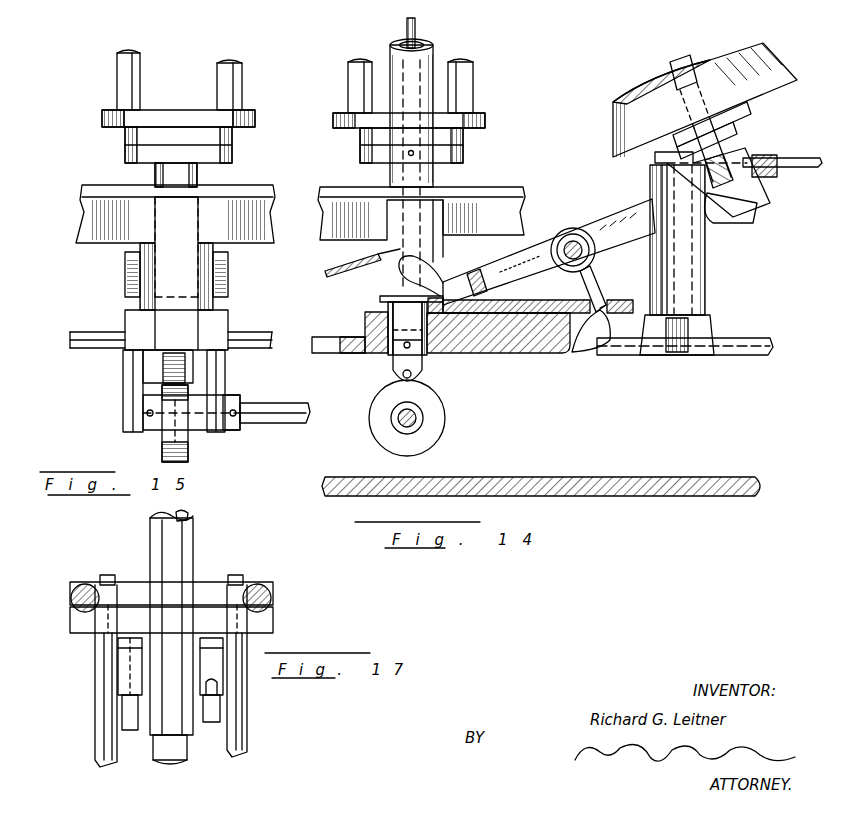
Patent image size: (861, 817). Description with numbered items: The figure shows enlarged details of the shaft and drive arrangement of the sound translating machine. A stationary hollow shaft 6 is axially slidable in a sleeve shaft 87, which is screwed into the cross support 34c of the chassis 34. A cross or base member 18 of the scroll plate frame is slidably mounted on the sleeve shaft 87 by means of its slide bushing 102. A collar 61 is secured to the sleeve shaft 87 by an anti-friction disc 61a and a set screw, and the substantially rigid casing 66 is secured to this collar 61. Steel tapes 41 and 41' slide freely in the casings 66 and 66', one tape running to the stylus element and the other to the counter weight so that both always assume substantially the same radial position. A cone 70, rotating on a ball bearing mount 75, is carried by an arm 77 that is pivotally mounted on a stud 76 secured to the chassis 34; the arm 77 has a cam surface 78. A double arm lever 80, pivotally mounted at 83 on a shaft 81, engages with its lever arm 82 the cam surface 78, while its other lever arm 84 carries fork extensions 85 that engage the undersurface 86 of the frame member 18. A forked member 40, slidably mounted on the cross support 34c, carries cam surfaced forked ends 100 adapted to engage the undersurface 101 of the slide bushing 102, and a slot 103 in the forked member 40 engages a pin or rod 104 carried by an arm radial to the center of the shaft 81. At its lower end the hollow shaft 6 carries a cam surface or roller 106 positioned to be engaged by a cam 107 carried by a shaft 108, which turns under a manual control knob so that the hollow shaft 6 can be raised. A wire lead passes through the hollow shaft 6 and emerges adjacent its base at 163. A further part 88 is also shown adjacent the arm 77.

In FIG. 15, the stationary hollow shaft 6 is at (162, 356).
In FIG. 14, the stationary hollow shaft 6 is at (418, 48).
In FIG. 17, the stationary hollow shaft 6 is at (190, 520).
In FIG. 15, the cross or base member 18 is at (262, 228).
In FIG. 14, the cross or base member 18 is at (460, 190).
In FIG. 14, the chassis 34 is at (628, 346).
In FIG. 14, the cross support 34c is at (368, 330).
In FIG. 14, the forked member 40 is at (505, 355).
In FIG. 17, the steel tape 41 is at (93, 712).
In FIG. 17, the steel tape 41' is at (244, 711).
In FIG. 15, the collar 61 is at (358, 133).
In FIG. 15, the anti-friction disc 61a is at (333, 116).
In FIG. 17, the casing 66 is at (97, 666).
In FIG. 17, the casing 66' is at (242, 670).
In FIG. 14, the cone 70 is at (625, 128).
In FIG. 14, the ball bearing mount 75 is at (745, 125).
In FIG. 14, the stud 76 is at (680, 272).
In FIG. 14, the arm 77 is at (745, 200).
In FIG. 14, the cam surface 78 is at (738, 225).
In FIG. 14, the double arm lever 80 is at (532, 252).
In FIG. 14, the shaft 81 is at (583, 255).
In FIG. 14, the lever arm 82 is at (636, 206).
In FIG. 14, the pivot 83 is at (573, 238).
In FIG. 14, the lever arm 84 is at (450, 275).
In FIG. 14, the fork extensions 85 is at (410, 272).
In FIG. 14, the undersurface 86 is at (412, 252).
In FIG. 15, the sleeve shaft 87 is at (170, 173).
In FIG. 14, the sleeve shaft 87 is at (433, 65).
In FIG. 17, the sleeve shaft 87 is at (178, 557).
In FIG. 14, the stop rod 88 is at (803, 168).
In FIG. 14, the cam surfaced forked ends 100 is at (505, 315).
In FIG. 14, the undersurface 101 is at (445, 340).
In FIG. 14, the slide bushing 102 is at (380, 250).
In FIG. 14, the slot 103 is at (602, 296).
In FIG. 14, the pin or rod 104 is at (590, 340).
In FIG. 15, the cam surface or roller 106 is at (165, 376).
In FIG. 14, the cam surface or roller 106 is at (395, 380).
In FIG. 15, the cam 107 is at (172, 441).
In FIG. 14, the cam 107 is at (425, 445).
In FIG. 15, the shaft 108 is at (290, 410).
In FIG. 14, the shaft 108 is at (418, 422).
In FIG. 14, the wire lead emergence point 163 is at (378, 271).